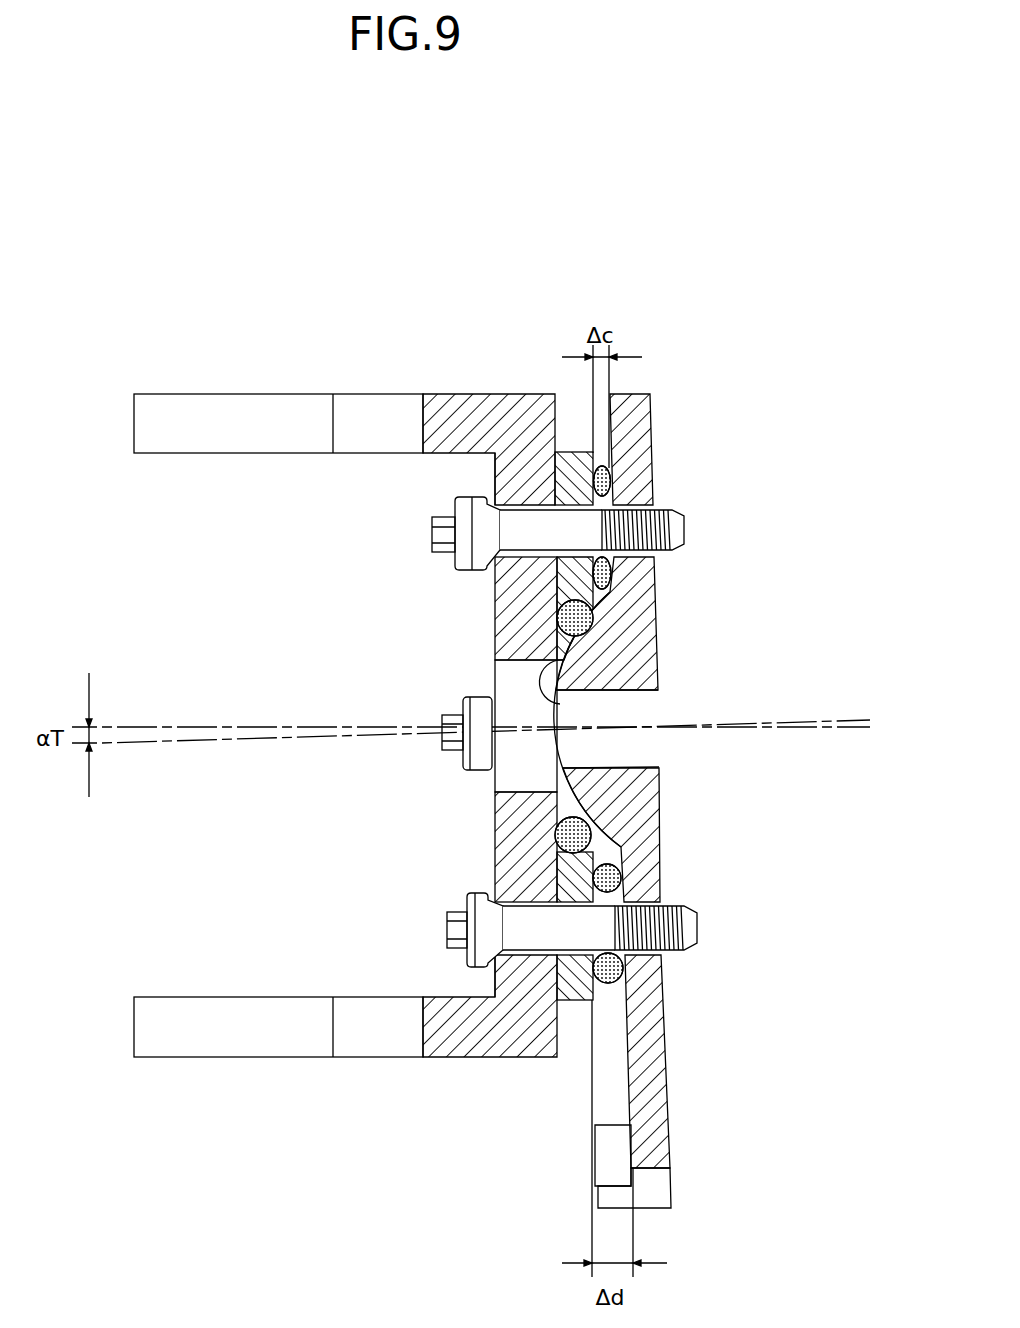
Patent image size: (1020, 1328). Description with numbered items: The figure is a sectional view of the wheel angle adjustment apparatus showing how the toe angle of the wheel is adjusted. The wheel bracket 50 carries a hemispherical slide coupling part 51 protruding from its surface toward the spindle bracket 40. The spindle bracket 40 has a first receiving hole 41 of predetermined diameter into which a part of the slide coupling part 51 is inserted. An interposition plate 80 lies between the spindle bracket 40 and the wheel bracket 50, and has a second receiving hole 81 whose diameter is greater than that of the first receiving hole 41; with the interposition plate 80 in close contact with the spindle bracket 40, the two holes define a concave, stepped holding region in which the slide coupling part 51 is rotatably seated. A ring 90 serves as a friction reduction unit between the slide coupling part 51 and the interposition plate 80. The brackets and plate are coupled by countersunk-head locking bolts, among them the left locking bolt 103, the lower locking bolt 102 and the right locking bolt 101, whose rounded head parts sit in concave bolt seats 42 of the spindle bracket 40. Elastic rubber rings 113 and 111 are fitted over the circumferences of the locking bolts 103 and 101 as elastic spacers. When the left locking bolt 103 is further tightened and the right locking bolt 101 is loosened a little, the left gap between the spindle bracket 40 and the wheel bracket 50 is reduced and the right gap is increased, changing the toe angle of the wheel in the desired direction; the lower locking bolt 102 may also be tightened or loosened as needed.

The spindle bracket 40 is at (520, 407).
The first receiving hole 41 is at (533, 758).
The concave bolt seat 42 is at (500, 503).
The wheel bracket 50 is at (650, 462).
The slide coupling part 51 is at (558, 705).
The interposition plate 80 is at (575, 473).
The second receiving hole 81 is at (565, 645).
The ring 90 is at (578, 608).
The right locking bolt 101 is at (447, 913).
The lower locking bolt 102 is at (448, 735).
The left locking bolt 103 is at (440, 530).
The elastic rubber ring 111 is at (622, 879).
The elastic rubber ring 113 is at (625, 478).